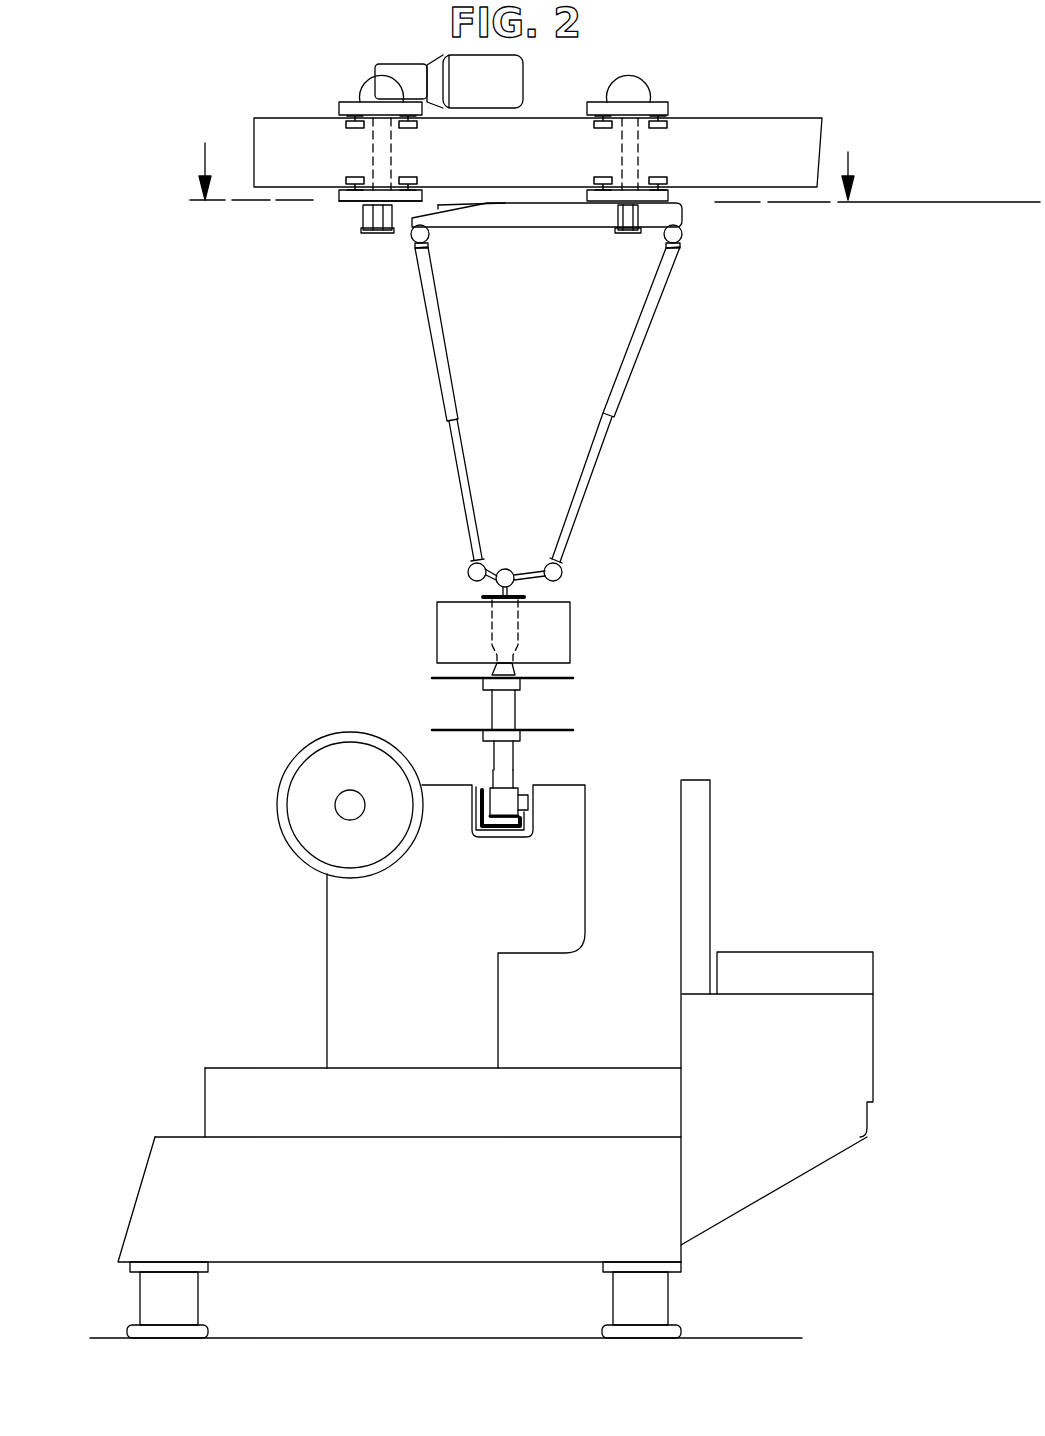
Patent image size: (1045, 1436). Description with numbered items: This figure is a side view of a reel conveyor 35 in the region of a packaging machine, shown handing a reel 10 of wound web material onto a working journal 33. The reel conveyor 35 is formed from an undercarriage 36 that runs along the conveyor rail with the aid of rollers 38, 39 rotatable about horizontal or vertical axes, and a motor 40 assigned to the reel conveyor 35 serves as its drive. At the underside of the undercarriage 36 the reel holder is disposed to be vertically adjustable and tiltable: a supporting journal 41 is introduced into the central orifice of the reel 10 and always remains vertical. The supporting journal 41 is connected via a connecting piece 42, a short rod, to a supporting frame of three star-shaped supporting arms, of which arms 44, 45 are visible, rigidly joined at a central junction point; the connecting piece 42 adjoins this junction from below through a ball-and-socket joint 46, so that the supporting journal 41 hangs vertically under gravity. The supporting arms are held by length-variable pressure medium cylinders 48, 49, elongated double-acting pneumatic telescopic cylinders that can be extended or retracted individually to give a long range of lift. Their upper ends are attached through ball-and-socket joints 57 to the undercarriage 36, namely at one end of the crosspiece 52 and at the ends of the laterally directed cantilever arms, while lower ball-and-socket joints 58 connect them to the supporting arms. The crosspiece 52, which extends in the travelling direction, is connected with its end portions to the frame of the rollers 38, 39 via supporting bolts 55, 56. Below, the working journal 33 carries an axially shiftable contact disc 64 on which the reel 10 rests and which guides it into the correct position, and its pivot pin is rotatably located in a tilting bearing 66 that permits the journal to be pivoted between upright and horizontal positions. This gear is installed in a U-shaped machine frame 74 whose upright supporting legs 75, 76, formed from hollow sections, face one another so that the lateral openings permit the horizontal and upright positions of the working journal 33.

The reel 10 is at (560, 631).
The working journal 33 is at (348, 805).
The reel conveyor 35 is at (680, 104).
The undercarriage 36 is at (343, 210).
The rollers 38 is at (345, 123).
The rollers 39 is at (372, 89).
The motor 40 is at (523, 80).
The supporting journal 41 is at (500, 625).
The connecting piece 42 is at (495, 591).
The supporting arm 44 is at (530, 570).
The supporting arm 45 is at (489, 565).
The ball-and-socket joint 46 is at (496, 580).
The pressure medium cylinder 48 is at (628, 368).
The pressure medium cylinder 49 is at (440, 358).
The crosspiece 52 is at (440, 206).
The supporting bolt 55 is at (373, 233).
The supporting bolt 56 is at (633, 233).
The ball-and-socket joint 57 is at (413, 237).
The ball-and-socket joint 58 is at (468, 568).
The contact disc 64 is at (573, 681).
The tilting bearing 66 is at (530, 778).
The machine frame 74 is at (551, 963).
The supporting leg 75 is at (600, 845).
The supporting leg 76 is at (468, 820).